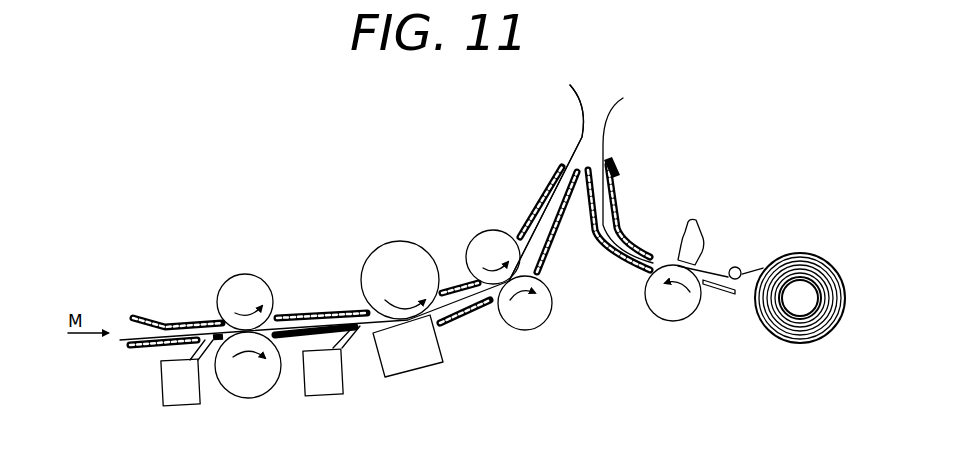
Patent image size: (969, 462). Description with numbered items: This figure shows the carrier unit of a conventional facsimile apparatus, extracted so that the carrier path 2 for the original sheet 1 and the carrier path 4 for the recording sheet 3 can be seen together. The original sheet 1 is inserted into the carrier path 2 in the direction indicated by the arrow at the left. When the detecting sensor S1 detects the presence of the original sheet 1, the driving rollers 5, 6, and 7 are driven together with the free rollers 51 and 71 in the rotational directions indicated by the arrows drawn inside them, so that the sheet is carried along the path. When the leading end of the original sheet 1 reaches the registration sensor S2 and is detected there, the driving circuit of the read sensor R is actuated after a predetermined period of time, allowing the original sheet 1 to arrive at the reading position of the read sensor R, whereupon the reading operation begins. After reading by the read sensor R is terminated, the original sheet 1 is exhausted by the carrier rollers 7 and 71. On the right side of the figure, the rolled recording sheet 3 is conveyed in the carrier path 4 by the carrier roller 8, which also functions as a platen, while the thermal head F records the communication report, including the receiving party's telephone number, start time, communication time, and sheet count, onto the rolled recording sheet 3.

The original sheet 1 is at (580, 138).
The carrier path for the original sheet 2 is at (318, 312).
The rolled recording sheet 3 is at (603, 147).
The carrier path for the recording sheet 4 is at (625, 203).
The driving roller 5 is at (240, 390).
The free roller 51 is at (245, 284).
The driving roller 6 is at (408, 255).
The driving roller 7 is at (532, 317).
The free roller 71 is at (487, 240).
The carrier roller 8 is at (673, 311).
The thermal head F is at (698, 221).
The read sensor R is at (408, 371).
The detecting sensor S1 is at (172, 405).
The registration sensor S2 is at (330, 395).